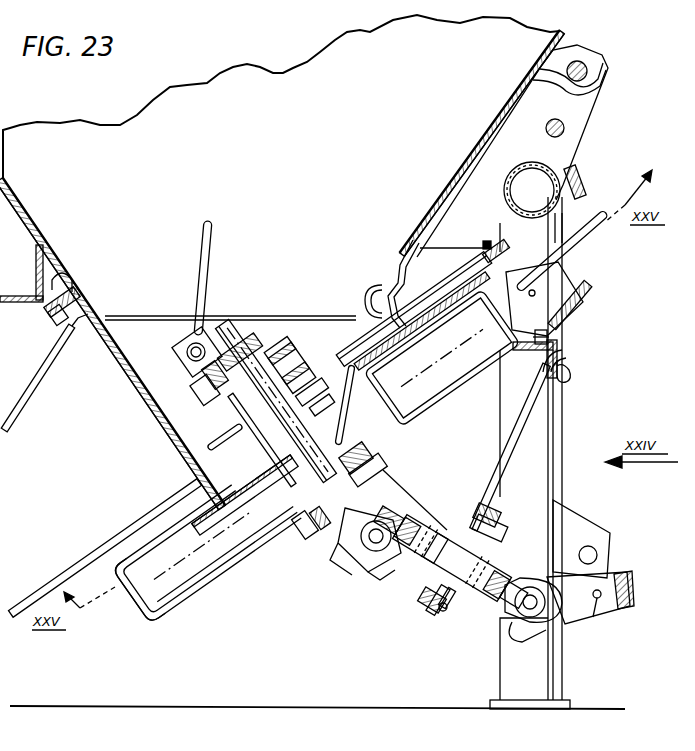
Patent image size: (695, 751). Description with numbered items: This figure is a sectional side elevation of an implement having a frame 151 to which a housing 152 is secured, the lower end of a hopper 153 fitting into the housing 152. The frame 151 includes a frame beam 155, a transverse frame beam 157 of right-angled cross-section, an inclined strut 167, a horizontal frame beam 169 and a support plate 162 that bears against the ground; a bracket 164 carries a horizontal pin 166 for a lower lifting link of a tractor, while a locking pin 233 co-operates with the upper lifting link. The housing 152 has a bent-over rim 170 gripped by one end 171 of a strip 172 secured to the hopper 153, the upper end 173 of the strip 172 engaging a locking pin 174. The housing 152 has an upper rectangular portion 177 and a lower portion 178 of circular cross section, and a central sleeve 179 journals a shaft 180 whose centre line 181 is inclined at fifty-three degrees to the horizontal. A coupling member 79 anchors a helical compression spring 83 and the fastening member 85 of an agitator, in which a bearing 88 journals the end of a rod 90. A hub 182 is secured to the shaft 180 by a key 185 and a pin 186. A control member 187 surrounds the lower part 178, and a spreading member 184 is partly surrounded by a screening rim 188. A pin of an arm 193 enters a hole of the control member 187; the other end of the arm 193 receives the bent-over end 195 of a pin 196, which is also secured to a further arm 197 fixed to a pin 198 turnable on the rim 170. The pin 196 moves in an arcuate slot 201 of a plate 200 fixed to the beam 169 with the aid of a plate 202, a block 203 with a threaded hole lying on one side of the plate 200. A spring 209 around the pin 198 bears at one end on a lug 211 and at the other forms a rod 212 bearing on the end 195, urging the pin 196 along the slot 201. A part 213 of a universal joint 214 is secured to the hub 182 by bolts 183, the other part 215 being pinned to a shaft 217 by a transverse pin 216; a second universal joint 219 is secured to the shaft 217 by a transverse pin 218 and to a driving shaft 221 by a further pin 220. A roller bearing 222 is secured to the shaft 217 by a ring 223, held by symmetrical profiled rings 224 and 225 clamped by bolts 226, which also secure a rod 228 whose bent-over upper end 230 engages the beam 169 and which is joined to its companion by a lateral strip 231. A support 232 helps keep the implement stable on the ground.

The hopper 153 is at (291, 78).
The strip 172 is at (438, 212).
The upper end of strip 173 is at (582, 88).
The locking pin 174 is at (580, 62).
The locking pin 233 is at (585, 185).
The pin 196 is at (594, 218).
The bent-over end of pin 195 is at (488, 242).
The frame beam 155 is at (478, 247).
The rod 212 is at (507, 250).
The end of strip 171 is at (405, 259).
The bent-over rim 170 is at (392, 283).
The arm 197 is at (472, 279).
The plate 200 is at (563, 288).
The arcuate slot 201 is at (548, 291).
The block 203 is at (541, 330).
The plate 202 is at (578, 321).
The horizontal frame beam 169 is at (562, 349).
The upper end of rod 230 is at (570, 377).
The frame 151 is at (563, 448).
The arm 193 is at (445, 337).
The bracket 164 is at (595, 532).
The horizontal pin 166 is at (598, 556).
The transverse pin 220 is at (597, 600).
The driving shaft 221 is at (619, 602).
The second universal joint 219 is at (513, 632).
The support plate 162 is at (560, 692).
The rod 228 is at (507, 466).
The lateral strip 231 is at (495, 507).
The ring 223 is at (494, 528).
The transverse pin 218 is at (492, 548).
The transverse pin 216 is at (432, 528).
The shaft 217 is at (408, 568).
The inclined strut 167 is at (402, 497).
The key 185 is at (385, 455).
The pin 186 is at (385, 467).
The part of universal joint 213 is at (352, 556).
The universal joint 214 is at (366, 580).
The part of universal joint 215 is at (386, 588).
The profiled ring 224 is at (421, 608).
The roller bearing 222 is at (434, 614).
The profiled ring 225 is at (446, 614).
The bolts 226 is at (450, 612).
The hub 182 is at (304, 528).
The bolts 183 is at (318, 540).
The control member 187 is at (262, 553).
The lower portion of housing 178 is at (245, 520).
The spreading member 184 is at (192, 592).
The screening rim 188 is at (136, 596).
The support 232 is at (93, 547).
The upper rectangular portion of housing 177 is at (112, 351).
The housing 152 is at (151, 402).
The transverse frame beam 157 is at (25, 296).
The bearing 88 is at (185, 340).
The fastening member 85 is at (205, 390).
The helical compression spring 83 is at (228, 431).
The central sleeve 179 is at (258, 447).
The rod 90 is at (203, 251).
The centre line 181 is at (226, 322).
The shaft 180 is at (248, 325).
The coupling member 79 is at (302, 362).
The pin 198 is at (356, 334).
The helical compression spring 209 is at (358, 352).
The lug 211 is at (355, 368).